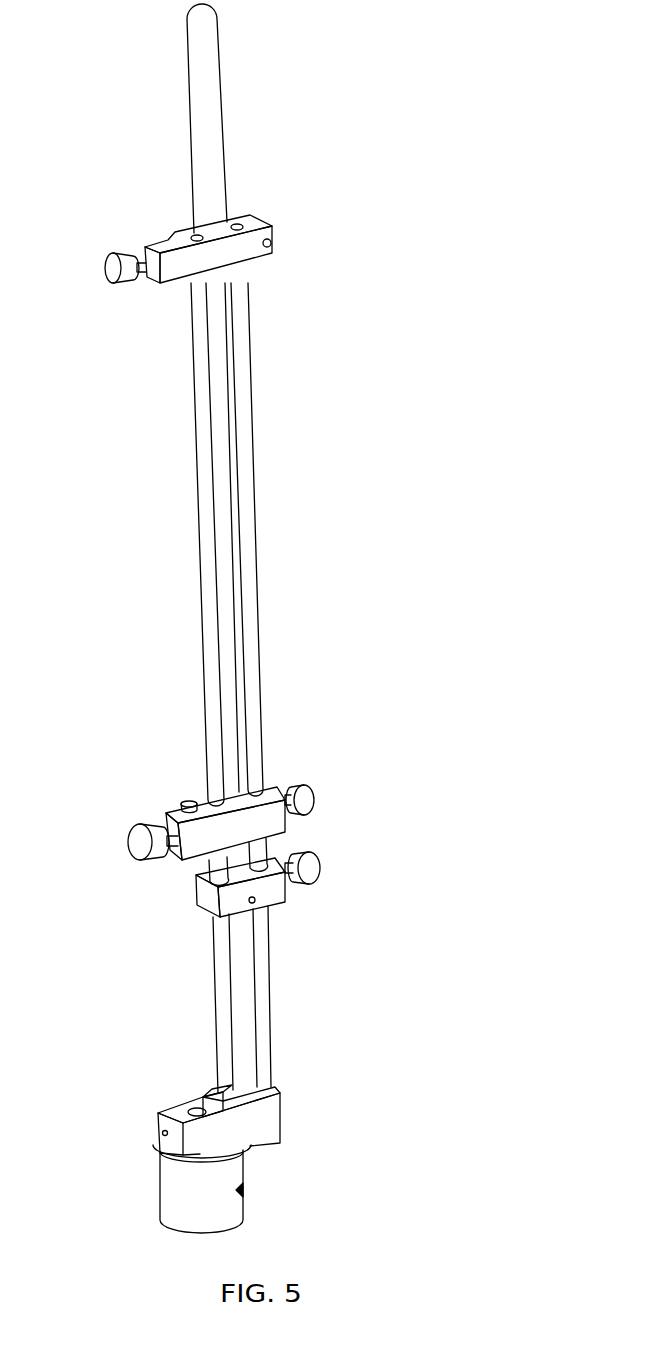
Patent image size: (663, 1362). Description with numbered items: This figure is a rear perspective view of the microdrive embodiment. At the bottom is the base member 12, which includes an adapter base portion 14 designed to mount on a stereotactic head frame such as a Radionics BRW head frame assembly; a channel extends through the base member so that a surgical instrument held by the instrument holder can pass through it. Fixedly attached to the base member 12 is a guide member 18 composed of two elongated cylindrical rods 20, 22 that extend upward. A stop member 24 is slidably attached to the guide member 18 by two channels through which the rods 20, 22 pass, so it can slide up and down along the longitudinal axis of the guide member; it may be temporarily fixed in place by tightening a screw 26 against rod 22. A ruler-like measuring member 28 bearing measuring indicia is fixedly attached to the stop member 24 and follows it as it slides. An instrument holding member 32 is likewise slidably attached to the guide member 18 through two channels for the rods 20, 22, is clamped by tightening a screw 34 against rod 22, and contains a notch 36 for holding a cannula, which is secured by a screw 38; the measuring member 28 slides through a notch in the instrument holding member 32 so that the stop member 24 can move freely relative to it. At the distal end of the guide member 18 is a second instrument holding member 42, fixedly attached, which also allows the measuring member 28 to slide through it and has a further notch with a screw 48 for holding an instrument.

The base member 12 is at (246, 1188).
The adapter base portion 14 is at (237, 1223).
The guide member 18 is at (255, 482).
The rod 20 is at (197, 502).
The rod 22 is at (263, 1002).
The stop member 24 is at (210, 893).
The screw 26 is at (320, 867).
The measuring member 28 is at (222, 110).
The instrument holding member 32 is at (268, 780).
The screw 34 is at (314, 800).
The notch 36 is at (180, 803).
The screw 38 is at (128, 839).
The second instrument holding member 42 is at (273, 228).
The screw 48 is at (108, 257).